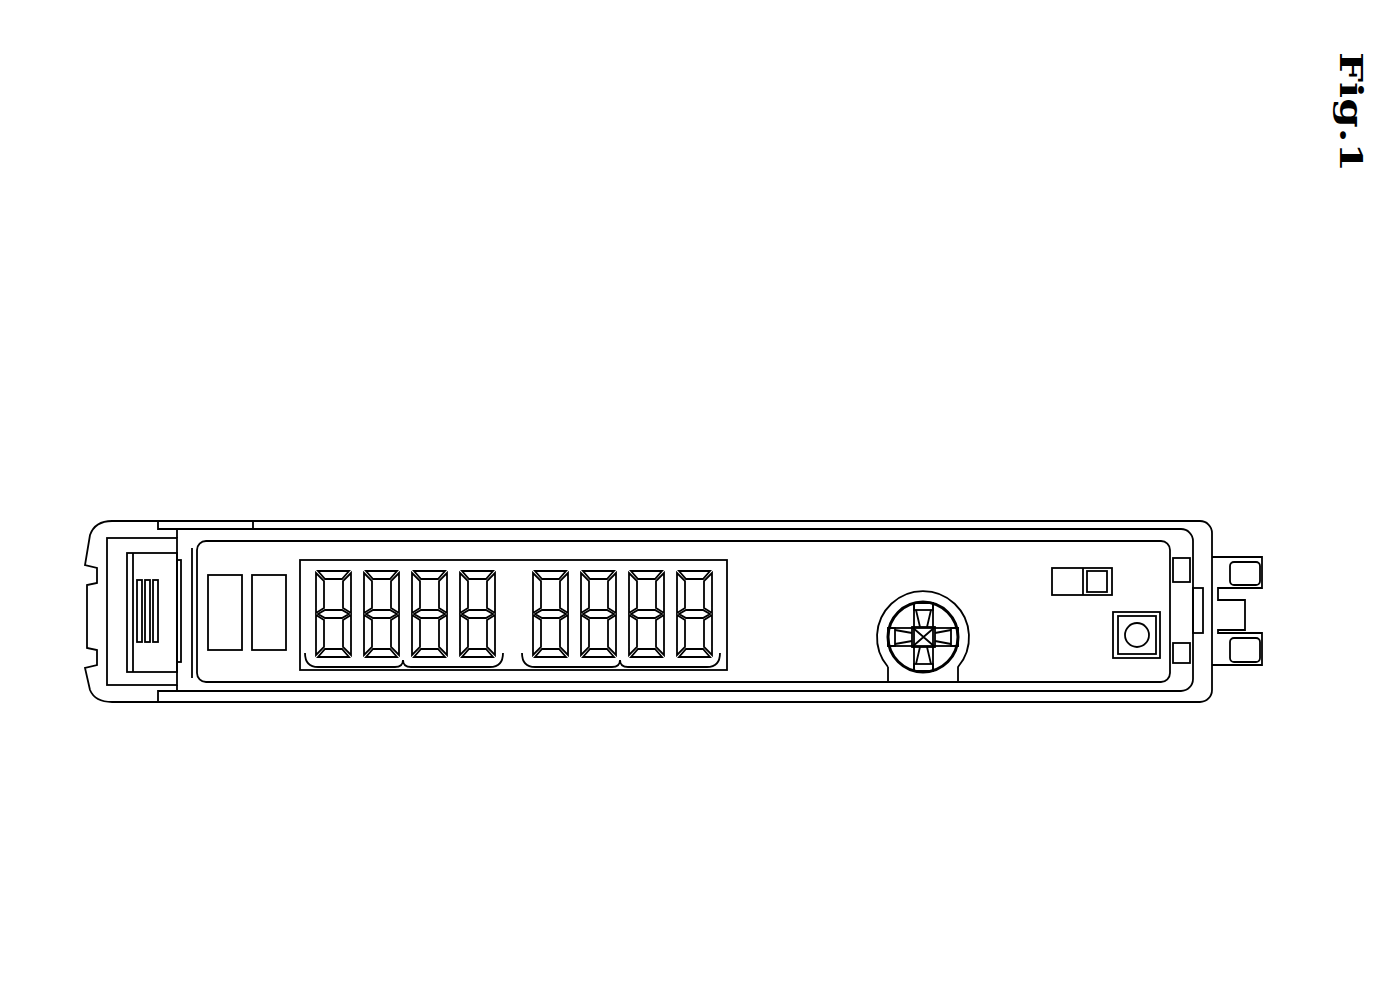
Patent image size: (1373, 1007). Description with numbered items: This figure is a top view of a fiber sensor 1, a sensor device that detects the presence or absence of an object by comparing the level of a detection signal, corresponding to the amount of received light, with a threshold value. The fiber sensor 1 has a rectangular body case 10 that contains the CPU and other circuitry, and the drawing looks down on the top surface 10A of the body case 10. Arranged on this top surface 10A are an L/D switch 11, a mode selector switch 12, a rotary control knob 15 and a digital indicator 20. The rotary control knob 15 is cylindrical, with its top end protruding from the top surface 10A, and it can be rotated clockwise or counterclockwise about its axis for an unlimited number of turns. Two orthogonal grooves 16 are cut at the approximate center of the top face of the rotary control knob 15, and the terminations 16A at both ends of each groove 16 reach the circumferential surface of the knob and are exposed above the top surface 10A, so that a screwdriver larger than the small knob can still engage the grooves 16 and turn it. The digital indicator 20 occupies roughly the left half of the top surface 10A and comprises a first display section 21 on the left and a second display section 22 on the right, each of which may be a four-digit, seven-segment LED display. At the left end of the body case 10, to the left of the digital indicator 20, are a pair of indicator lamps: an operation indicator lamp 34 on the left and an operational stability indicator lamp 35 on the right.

The fiber sensor 1 is at (802, 396).
The body case 10 is at (925, 488).
The top surface 10A is at (762, 562).
The L/D switch 11 is at (1093, 548).
The mode selector switch 12 is at (1138, 617).
The rotary control knob 15 is at (950, 581).
The grooves 16 is at (922, 662).
The terminations 16A is at (945, 678).
The digital indicator 20 is at (528, 539).
The first display section 21 is at (403, 667).
The second display section 22 is at (620, 670).
The operation indicator lamp 34 is at (268, 575).
The operational stability indicator lamp 35 is at (222, 575).